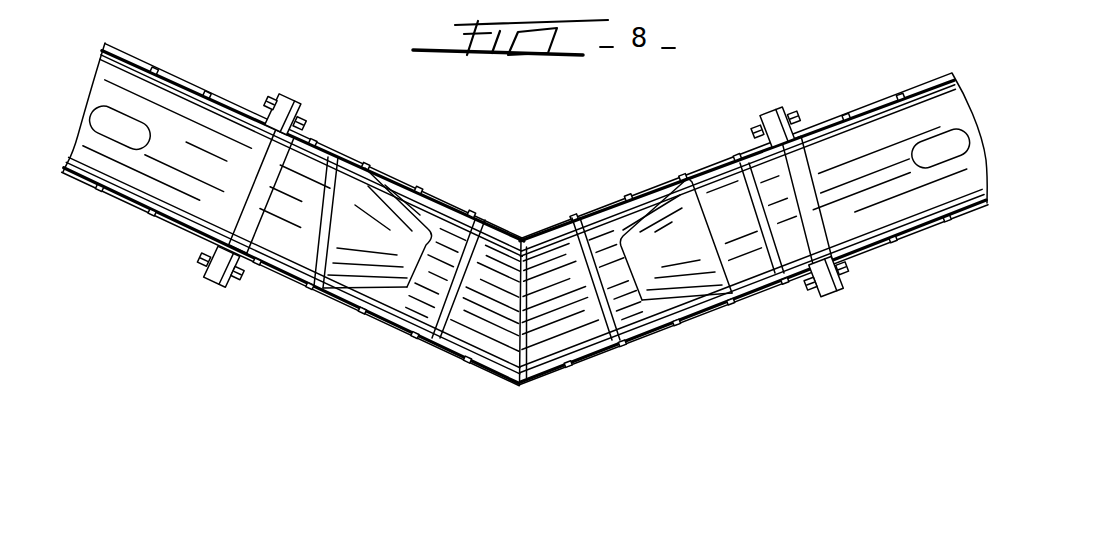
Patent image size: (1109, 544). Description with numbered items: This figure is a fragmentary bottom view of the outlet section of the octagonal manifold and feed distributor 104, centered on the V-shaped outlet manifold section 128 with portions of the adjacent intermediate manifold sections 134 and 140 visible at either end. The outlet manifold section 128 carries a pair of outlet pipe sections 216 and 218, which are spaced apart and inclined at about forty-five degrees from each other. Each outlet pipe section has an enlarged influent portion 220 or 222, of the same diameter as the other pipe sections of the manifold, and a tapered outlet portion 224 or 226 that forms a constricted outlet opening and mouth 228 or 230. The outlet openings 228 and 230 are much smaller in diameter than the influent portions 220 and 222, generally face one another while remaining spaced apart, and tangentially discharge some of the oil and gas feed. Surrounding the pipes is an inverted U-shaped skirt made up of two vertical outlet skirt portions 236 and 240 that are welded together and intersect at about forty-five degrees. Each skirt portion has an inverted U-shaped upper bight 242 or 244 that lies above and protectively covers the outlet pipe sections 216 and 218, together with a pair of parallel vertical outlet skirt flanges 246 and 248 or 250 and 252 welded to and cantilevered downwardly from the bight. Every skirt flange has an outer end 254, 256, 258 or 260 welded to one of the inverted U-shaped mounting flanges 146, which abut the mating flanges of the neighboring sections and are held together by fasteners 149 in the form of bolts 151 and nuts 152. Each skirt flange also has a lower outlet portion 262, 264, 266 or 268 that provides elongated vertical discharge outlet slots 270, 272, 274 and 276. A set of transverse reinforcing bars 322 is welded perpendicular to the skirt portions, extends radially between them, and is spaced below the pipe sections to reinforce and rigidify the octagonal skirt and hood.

The octagonal manifold and feed distributor 104 is at (187, 241).
The outlet manifold section 128 is at (520, 224).
The intermediate manifold section 134 is at (832, 116).
The intermediate manifold section 140 is at (178, 74).
The inverted U-shaped mounting flange 146 is at (283, 95).
The fasteners 149 is at (778, 112).
The bolts 151 is at (843, 270).
The nuts 152 is at (207, 254).
The outlet pipe section 216 is at (333, 141).
The outlet pipe section 218 is at (727, 170).
The enlarged influent portion 220 is at (318, 290).
The enlarged influent portion 222 is at (757, 285).
The tapered outlet portion 224 is at (378, 290).
The tapered outlet portion 226 is at (673, 300).
The outlet opening and mouth 228 is at (434, 250).
The outlet opening and mouth 230 is at (623, 258).
The vertical outlet skirt portion 236 is at (453, 356).
The vertical outlet skirt portion 240 is at (587, 361).
The inverted U-shaped upper bight 242 is at (509, 304).
The inverted U-shaped upper bight 244 is at (574, 313).
The vertical outlet skirt flange 246 is at (382, 167).
The vertical outlet skirt flange 248 is at (425, 342).
The vertical outlet skirt flange 250 is at (647, 189).
The vertical outlet skirt flange 252 is at (706, 313).
The outer end 254 is at (305, 120).
The outer end 256 is at (253, 265).
The outer end 258 is at (752, 142).
The outer end 260 is at (798, 275).
The lower outlet portion 262 is at (307, 133).
The lower outlet portion 264 is at (273, 272).
The lower outlet portion 266 is at (712, 160).
The lower outlet portion 268 is at (647, 337).
The vertical discharge outlet slot 270 is at (476, 214).
The vertical discharge outlet slot 272 is at (360, 313).
The vertical discharge outlet slot 274 is at (585, 214).
The vertical discharge outlet slot 276 is at (633, 343).
The transverse reinforcing bars 322 is at (302, 212).